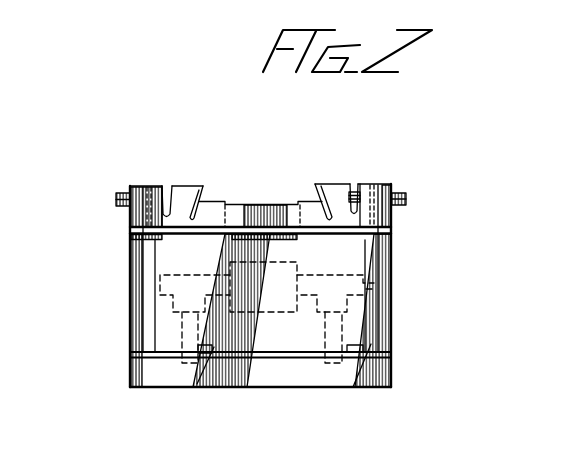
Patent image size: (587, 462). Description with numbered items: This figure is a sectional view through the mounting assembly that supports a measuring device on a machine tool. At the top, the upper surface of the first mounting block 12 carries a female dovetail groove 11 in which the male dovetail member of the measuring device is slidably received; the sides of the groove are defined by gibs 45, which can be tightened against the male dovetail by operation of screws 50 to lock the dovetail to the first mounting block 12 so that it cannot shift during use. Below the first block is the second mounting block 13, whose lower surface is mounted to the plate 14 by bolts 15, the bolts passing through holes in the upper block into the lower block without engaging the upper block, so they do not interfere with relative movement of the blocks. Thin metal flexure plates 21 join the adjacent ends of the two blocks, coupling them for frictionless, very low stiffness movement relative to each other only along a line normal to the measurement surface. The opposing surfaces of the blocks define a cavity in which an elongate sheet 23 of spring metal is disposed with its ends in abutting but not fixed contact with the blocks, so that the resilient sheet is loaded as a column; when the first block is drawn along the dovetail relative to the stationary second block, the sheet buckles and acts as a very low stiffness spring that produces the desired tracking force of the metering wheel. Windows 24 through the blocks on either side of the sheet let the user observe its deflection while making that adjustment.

The female dovetail groove 11 is at (257, 196).
The first mounting block 12 is at (128, 247).
The second mounting block 13 is at (128, 336).
The plate 14 is at (130, 378).
The bolts 15 is at (208, 388).
The flexure plates 21 is at (380, 338).
The sheet of spring metal 23 is at (257, 268).
The windows 24 is at (159, 288).
The gibs 45 is at (186, 186).
The screws 50 is at (121, 192).